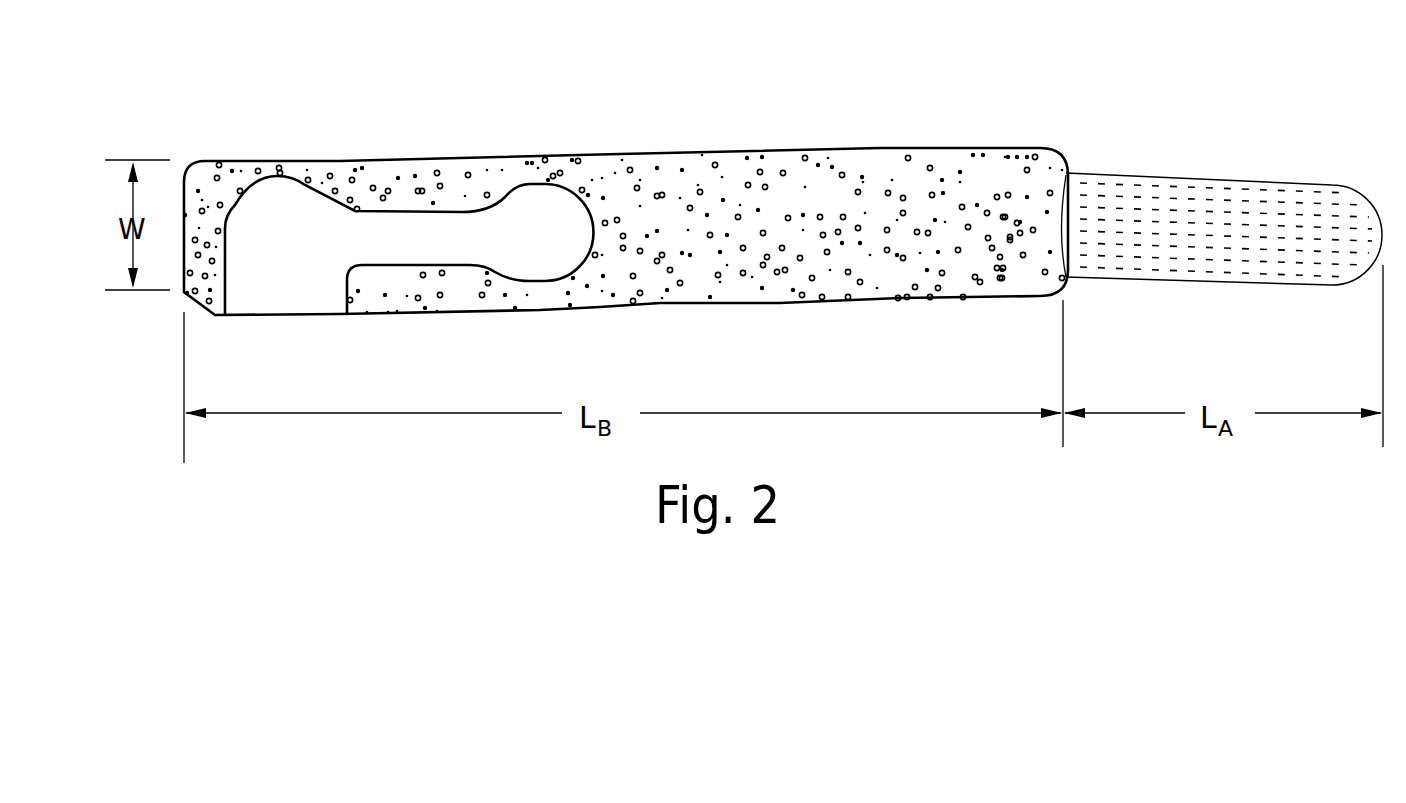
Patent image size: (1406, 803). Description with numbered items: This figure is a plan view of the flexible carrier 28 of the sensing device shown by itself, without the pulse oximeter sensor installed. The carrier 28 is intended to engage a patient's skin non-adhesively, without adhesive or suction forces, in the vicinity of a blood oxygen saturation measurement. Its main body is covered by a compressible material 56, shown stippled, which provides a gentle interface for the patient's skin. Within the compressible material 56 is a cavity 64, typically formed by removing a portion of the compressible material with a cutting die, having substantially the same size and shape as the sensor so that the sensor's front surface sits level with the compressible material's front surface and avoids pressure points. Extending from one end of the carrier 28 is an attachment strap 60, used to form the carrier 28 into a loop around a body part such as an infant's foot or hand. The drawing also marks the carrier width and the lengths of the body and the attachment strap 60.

The flexible carrier 28 is at (625, 204).
The compressible material 56 is at (830, 280).
The attachment strap 60 is at (1185, 175).
The cavity 64 is at (302, 271).